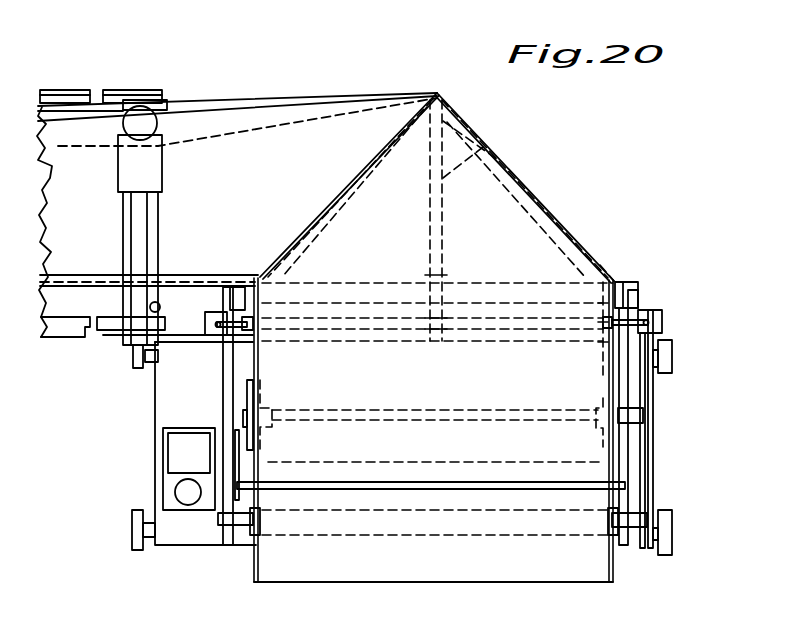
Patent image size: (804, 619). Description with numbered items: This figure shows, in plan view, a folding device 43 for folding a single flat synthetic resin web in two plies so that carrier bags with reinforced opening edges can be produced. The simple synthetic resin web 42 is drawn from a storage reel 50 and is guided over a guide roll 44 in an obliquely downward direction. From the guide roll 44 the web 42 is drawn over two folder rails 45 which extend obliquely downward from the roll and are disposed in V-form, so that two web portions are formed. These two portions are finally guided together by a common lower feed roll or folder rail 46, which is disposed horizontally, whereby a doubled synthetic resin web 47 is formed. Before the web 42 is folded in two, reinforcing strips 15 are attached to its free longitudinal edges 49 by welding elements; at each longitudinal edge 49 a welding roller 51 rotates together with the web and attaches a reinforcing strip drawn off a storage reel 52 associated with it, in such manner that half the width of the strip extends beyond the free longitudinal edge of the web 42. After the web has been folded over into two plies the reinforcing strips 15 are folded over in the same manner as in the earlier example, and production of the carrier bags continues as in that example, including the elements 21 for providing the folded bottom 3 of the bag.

The folded bottom 3 is at (220, 125).
The reinforcing strips 15 is at (95, 283).
The elements for providing the folded bottom 21 is at (143, 118).
The simple synthetic resin web 42 is at (583, 398).
The folding device 43 is at (580, 225).
The guide roll 44 is at (606, 267).
The folder rails 45 is at (330, 203).
The lower feed roll or folder rail 46 is at (483, 152).
The doubled synthetic resin web 47 is at (62, 232).
The free longitudinal edges 49 is at (255, 459).
The storage reel 50 is at (583, 565).
The welding roller 51 is at (257, 275).
The storage reel for reinforcing strip 52 is at (253, 430).